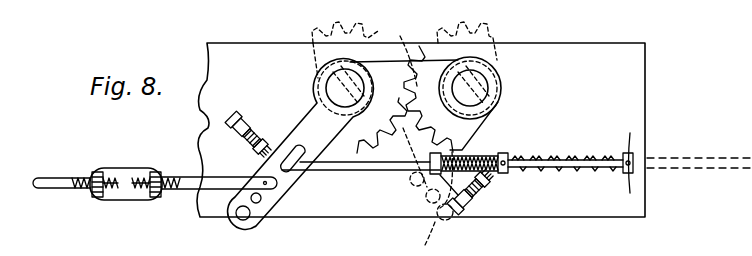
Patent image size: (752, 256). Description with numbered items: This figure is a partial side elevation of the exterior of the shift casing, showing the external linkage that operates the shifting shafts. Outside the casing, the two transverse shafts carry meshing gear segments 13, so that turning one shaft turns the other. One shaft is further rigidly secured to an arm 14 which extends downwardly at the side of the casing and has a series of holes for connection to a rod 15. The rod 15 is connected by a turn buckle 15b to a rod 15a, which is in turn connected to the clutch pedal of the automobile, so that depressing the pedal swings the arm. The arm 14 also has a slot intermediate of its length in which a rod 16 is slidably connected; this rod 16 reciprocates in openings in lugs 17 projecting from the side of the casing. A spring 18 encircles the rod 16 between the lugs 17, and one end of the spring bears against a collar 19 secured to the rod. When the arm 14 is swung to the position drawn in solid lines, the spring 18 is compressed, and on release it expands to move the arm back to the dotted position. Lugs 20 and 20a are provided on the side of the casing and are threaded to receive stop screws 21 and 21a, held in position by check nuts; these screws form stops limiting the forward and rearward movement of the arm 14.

The gear segments 13 is at (422, 33).
The arm 14 is at (310, 125).
The rod 15 is at (176, 191).
The rod 15a is at (58, 190).
The turn buckle 15b is at (115, 169).
The rod 16 is at (343, 173).
The lugs 17 is at (440, 181).
The spring 18 is at (470, 157).
The collar 19 is at (510, 155).
The lug 20 is at (260, 138).
The stop screw 21 is at (233, 127).
The lug 20a is at (470, 194).
The stop screw 21a is at (460, 206).